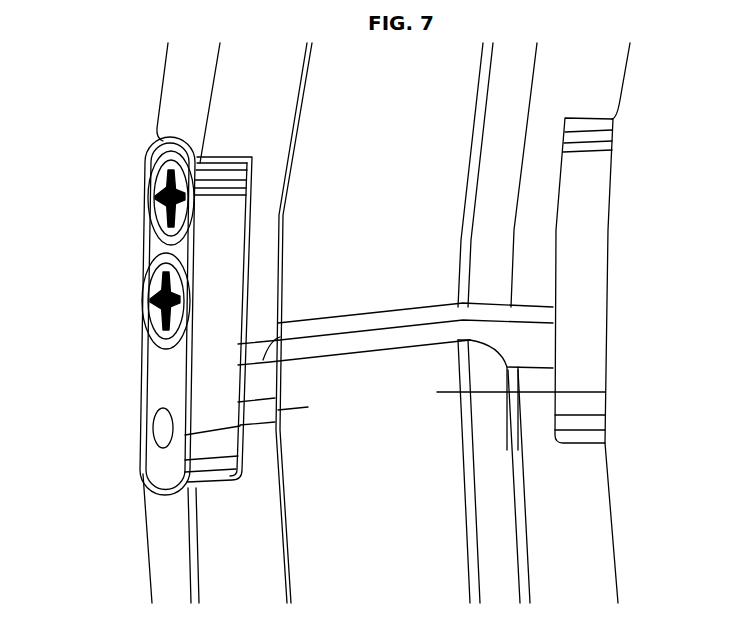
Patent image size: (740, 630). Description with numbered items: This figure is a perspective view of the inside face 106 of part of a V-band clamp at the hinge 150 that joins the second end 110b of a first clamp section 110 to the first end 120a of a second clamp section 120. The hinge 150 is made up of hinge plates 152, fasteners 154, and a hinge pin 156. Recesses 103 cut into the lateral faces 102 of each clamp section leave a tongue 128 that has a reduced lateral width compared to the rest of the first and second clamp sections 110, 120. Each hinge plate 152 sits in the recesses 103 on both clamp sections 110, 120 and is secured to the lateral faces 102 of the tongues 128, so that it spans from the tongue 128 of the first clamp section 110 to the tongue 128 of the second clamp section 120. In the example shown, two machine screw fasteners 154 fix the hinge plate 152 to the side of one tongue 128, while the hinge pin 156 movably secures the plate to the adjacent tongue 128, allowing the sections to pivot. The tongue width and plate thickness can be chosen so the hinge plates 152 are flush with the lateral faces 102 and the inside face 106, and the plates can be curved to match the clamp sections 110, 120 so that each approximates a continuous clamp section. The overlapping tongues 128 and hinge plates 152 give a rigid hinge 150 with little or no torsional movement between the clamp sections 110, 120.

The lateral faces 102 is at (175, 80).
The recesses 103 is at (247, 230).
The inside face 106 is at (567, 515).
The first clamp section 110 is at (616, 567).
The second end of the first clamp section 110b is at (396, 557).
The second clamp section 120 is at (607, 86).
The first end of the second clamp section 120a is at (408, 112).
The tongue 128 is at (390, 277).
The hinge 150 is at (112, 112).
The hinge plate 152 is at (162, 376).
The fasteners 154 is at (168, 202).
The hinge pin 156 is at (163, 428).